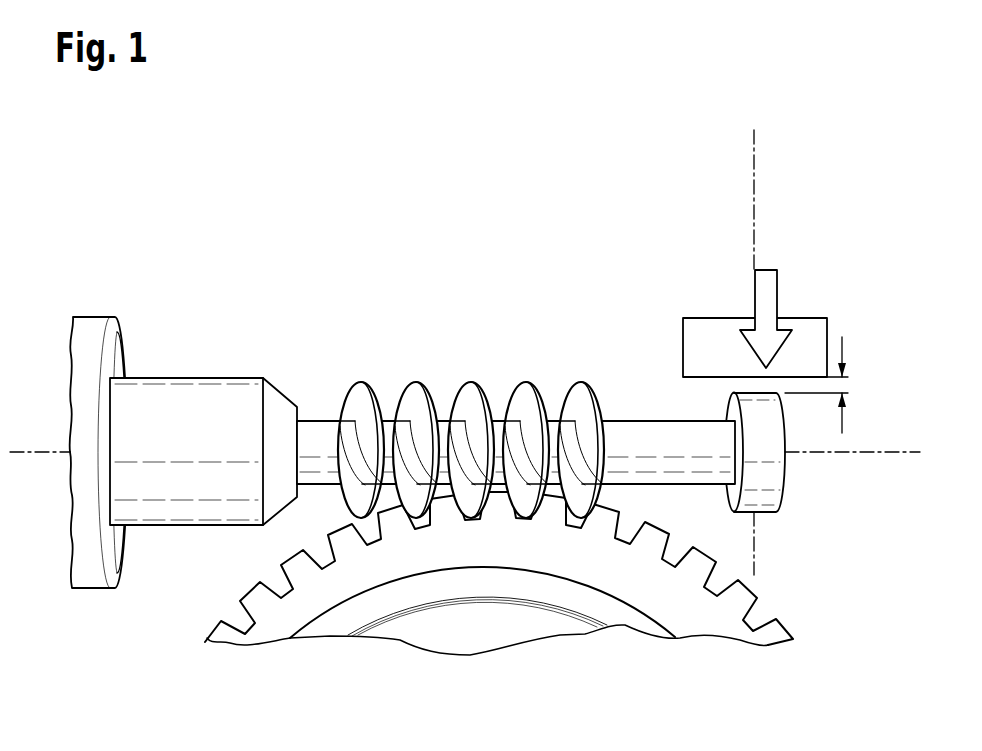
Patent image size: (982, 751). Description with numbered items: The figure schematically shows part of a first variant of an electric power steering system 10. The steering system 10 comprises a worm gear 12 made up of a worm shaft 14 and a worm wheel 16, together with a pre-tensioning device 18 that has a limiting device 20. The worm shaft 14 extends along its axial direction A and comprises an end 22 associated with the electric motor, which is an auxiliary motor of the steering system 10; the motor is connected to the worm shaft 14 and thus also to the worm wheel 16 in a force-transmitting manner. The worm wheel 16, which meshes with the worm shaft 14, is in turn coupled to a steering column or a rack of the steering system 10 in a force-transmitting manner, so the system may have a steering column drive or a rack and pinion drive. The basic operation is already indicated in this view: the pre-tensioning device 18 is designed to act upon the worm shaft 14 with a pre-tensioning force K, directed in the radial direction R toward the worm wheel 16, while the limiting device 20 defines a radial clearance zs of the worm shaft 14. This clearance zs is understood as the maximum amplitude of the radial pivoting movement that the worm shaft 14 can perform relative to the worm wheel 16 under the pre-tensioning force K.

The electric power steering system 10 is at (334, 197).
The worm gear 12 is at (790, 568).
The worm shaft 14 is at (352, 403).
The worm wheel 16 is at (278, 622).
The pre-tensioning device 18 is at (827, 268).
The limiting device 20 is at (683, 335).
The end 22 is at (135, 398).
The pre-tensioning force K is at (768, 277).
The radial direction R is at (755, 150).
The radial clearance zs is at (845, 385).
The axial direction A is at (907, 453).